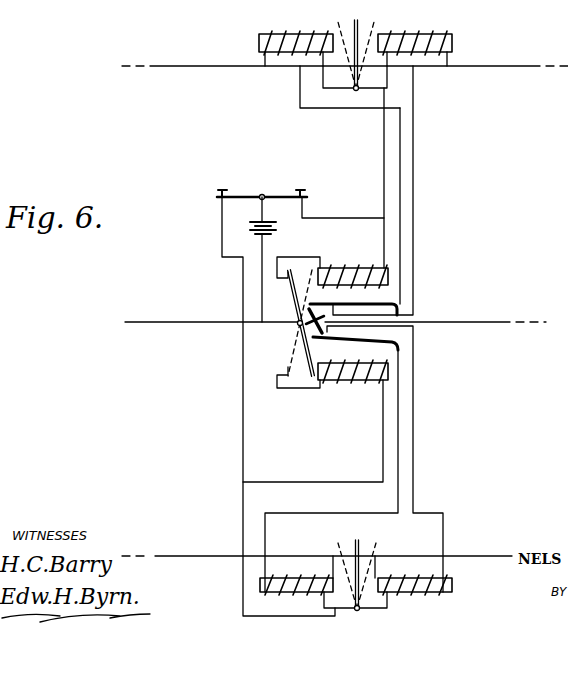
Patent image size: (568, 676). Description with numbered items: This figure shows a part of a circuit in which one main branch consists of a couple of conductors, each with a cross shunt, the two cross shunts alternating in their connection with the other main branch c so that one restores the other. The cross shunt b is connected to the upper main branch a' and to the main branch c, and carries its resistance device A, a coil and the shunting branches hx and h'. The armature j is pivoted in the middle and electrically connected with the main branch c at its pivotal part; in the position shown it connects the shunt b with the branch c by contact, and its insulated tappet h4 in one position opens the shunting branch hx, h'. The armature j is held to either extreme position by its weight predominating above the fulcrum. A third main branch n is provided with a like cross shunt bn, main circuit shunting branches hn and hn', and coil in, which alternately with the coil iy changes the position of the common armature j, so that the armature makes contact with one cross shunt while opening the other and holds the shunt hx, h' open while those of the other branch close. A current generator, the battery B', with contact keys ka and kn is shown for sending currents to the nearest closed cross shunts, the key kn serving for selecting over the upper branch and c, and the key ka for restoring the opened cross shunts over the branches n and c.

The resistance device A is at (359, 24).
The upper line wire a' is at (345, 82).
The cross shunt b is at (383, 130).
The shunting branch hx is at (414, 133).
The shunting branch h' is at (418, 206).
The contact key ka is at (219, 191).
The contact key kn is at (337, 191).
The battery B' is at (255, 259).
The main branch c is at (335, 312).
The coil iy is at (350, 265).
The coil in is at (356, 386).
The cross shunt bn is at (383, 436).
The armature j is at (297, 326).
The insulated tappet h4 is at (325, 314).
The main circuit shunting branch hn is at (385, 459).
The main circuit shunting branch hn' is at (355, 471).
The third main branch n is at (317, 548).